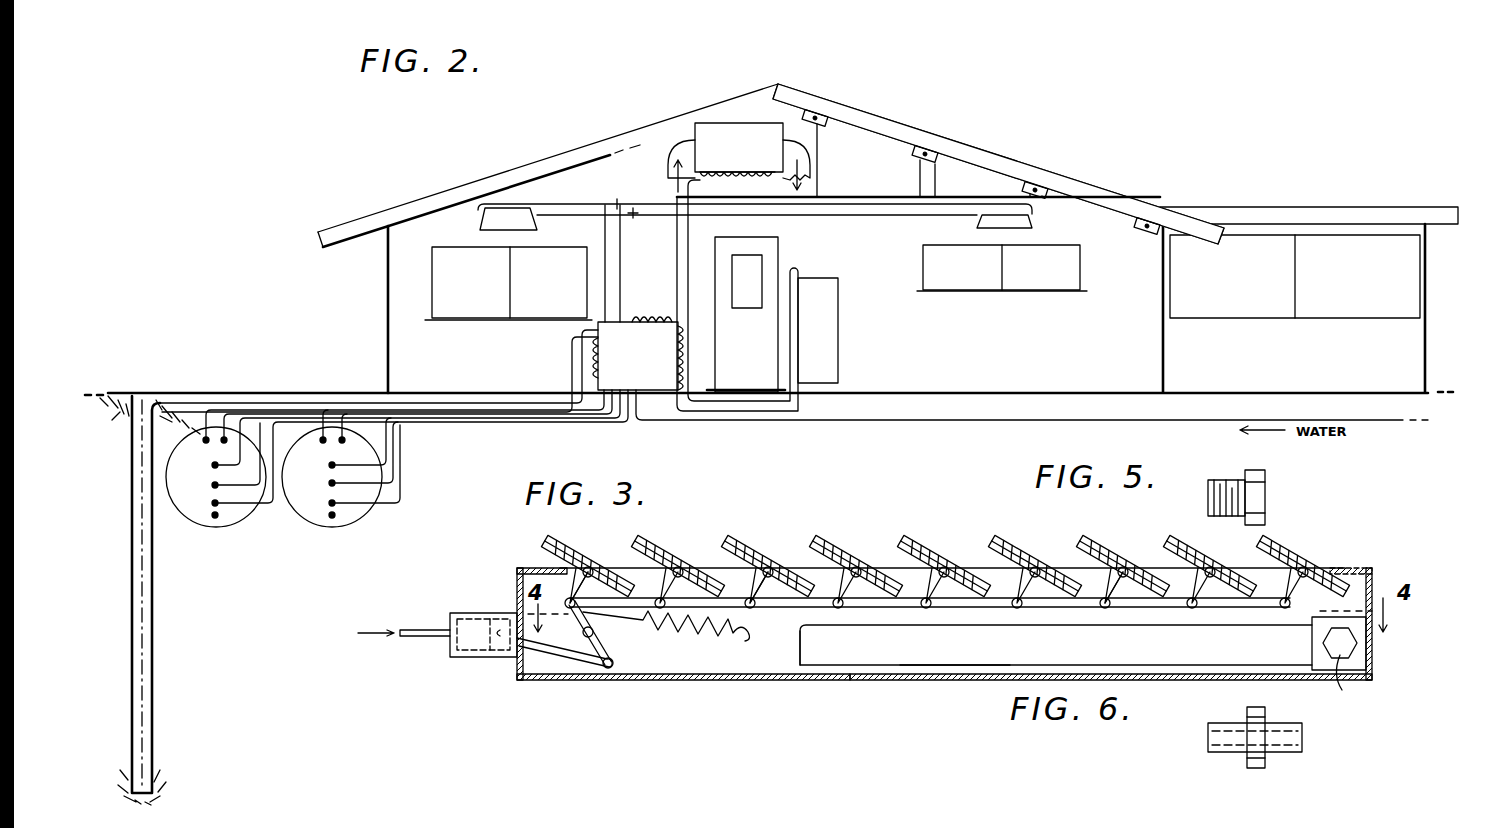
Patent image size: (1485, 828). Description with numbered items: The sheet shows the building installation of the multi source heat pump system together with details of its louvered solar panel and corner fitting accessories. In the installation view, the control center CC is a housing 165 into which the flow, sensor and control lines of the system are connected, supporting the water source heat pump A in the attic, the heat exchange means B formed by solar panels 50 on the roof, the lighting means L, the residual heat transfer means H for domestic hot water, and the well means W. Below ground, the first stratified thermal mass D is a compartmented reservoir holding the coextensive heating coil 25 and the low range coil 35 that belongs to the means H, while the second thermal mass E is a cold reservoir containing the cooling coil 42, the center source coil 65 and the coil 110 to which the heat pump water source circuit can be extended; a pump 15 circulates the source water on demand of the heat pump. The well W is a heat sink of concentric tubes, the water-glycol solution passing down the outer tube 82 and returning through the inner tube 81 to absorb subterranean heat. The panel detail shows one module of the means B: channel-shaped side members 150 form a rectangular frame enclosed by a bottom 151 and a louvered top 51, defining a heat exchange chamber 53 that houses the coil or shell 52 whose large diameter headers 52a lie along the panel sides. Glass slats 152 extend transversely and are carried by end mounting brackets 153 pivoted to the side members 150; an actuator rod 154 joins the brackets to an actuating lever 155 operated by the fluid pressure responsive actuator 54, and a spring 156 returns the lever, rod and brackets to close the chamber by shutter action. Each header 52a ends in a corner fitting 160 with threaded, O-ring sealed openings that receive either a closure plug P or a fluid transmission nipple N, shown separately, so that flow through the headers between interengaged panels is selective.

In FIG. 2, the heat pump A is at (752, 152).
In FIG. 2, the heat exchange means B is at (902, 120).
In FIG. 3, the heat exchange means B is at (689, 546).
In FIG. 2, the control center CC is at (638, 353).
In FIG. 2, the first stratified thermal mass D is at (196, 522).
In FIG. 2, the second thermal mass E is at (305, 522).
In FIG. 2, the residual heat transfer means H is at (849, 341).
In FIG. 2, the lighting means L is at (470, 223).
In FIG. 2, the well means W is at (152, 650).
In FIG. 3, the closure plug P is at (1349, 683).
In FIG. 5, the closure plug P is at (1268, 487).
In FIG. 6, the fluid transmission nipple N is at (1305, 740).
In FIG. 2, the solar panel 50 is at (869, 133).
In FIG. 3, the solar panel 50 is at (801, 690).
In FIG. 2, the housing 165 is at (589, 376).
In FIG. 2, the pump 15 is at (210, 481).
In FIG. 2, the heat exchanging coil 25 is at (218, 517).
In FIG. 2, the heat exchanging coil 35 is at (210, 447).
In FIG. 2, the heat exchange coil 42 is at (335, 517).
In FIG. 2, the heat exchanging coil 65 is at (326, 445).
In FIG. 2, the heat exchanging coil 110 is at (326, 483).
In FIG. 2, the inner tube 81 is at (145, 701).
In FIG. 2, the outer tube 82 is at (151, 726).
In FIG. 3, the louvered top 51 is at (870, 541).
In FIG. 3, the coil or plate-like shell 52 is at (880, 678).
In FIG. 3, the header 52a is at (1134, 647).
In FIG. 3, the heat exchange chamber 53 is at (657, 653).
In FIG. 3, the actuator 54 is at (468, 658).
In FIG. 3, the side member 150 is at (516, 586).
In FIG. 3, the bottom 151 is at (955, 670).
In FIG. 3, the glass slat 152 is at (576, 540).
In FIG. 3, the end mounting bracket 153 is at (582, 566).
In FIG. 3, the actuator rod 154 is at (801, 638).
In FIG. 3, the actuating lever 155 is at (573, 672).
In FIG. 3, the spring 156 is at (707, 640).
In FIG. 3, the corner fitting 160 is at (1368, 637).